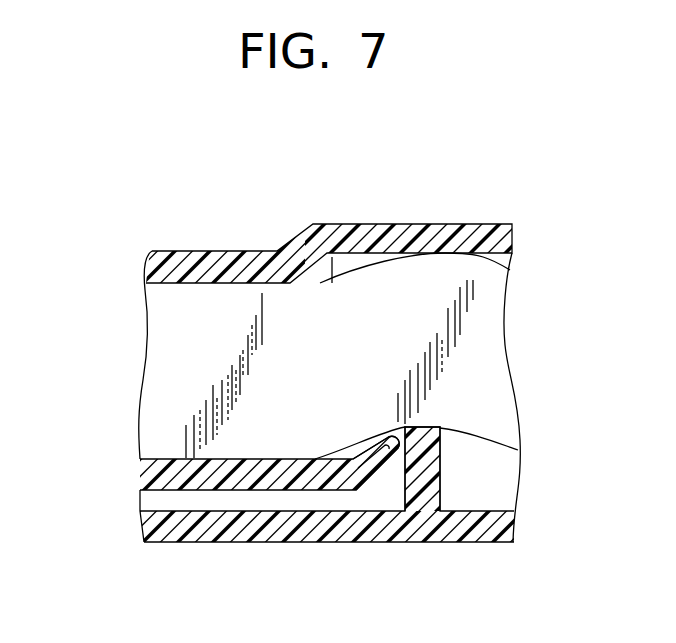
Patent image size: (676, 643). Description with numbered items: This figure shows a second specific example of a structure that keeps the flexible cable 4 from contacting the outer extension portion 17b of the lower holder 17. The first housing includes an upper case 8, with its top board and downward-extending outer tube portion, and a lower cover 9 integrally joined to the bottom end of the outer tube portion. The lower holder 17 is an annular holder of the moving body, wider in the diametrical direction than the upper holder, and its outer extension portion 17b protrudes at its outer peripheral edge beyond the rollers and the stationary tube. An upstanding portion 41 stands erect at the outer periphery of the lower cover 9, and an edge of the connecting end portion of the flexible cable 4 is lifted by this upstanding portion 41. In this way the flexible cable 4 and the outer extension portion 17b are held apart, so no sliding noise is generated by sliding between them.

The upper case 8 is at (437, 210).
The flexible cable 4 is at (172, 374).
The lower holder 17 is at (232, 480).
The outer extension portion 17b is at (372, 468).
The lower cover 9 is at (318, 527).
The upstanding portion 41 is at (432, 470).